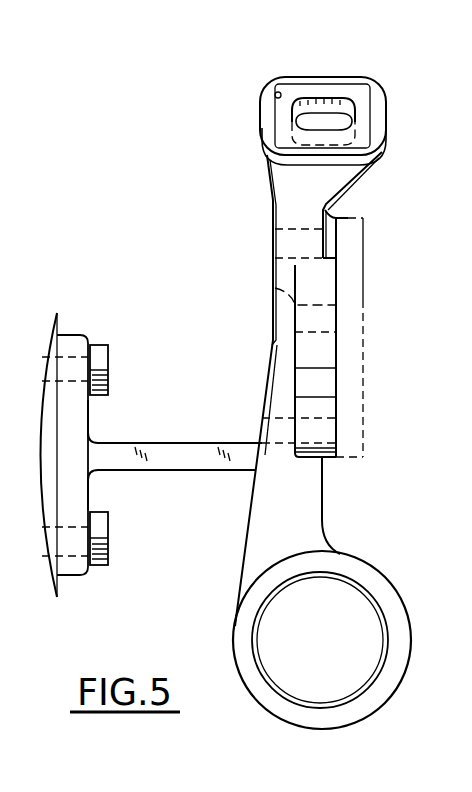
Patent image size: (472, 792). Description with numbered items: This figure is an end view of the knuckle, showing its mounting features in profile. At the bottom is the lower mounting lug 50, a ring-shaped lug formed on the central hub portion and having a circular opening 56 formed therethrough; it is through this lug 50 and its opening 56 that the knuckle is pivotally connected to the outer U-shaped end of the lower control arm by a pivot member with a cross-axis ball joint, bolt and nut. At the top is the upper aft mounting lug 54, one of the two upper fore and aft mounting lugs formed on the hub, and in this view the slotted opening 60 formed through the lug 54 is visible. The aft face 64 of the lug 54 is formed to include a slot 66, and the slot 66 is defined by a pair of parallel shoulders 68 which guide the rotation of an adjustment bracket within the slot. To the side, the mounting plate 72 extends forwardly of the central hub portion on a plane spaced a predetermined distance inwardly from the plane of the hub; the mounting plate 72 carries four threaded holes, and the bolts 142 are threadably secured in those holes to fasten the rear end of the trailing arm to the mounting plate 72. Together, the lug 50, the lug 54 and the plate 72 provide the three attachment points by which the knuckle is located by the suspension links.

The lower mounting lug 50 is at (409, 669).
The upper aft mounting lug 54 is at (313, 76).
The circular opening 56 is at (380, 611).
The slotted opening 60 is at (326, 100).
The aft face 64 is at (281, 137).
The slot 66 is at (299, 77).
The parallel shoulders 68 is at (277, 92).
The mounting plate 72 is at (73, 333).
The bolts 142 is at (112, 365).